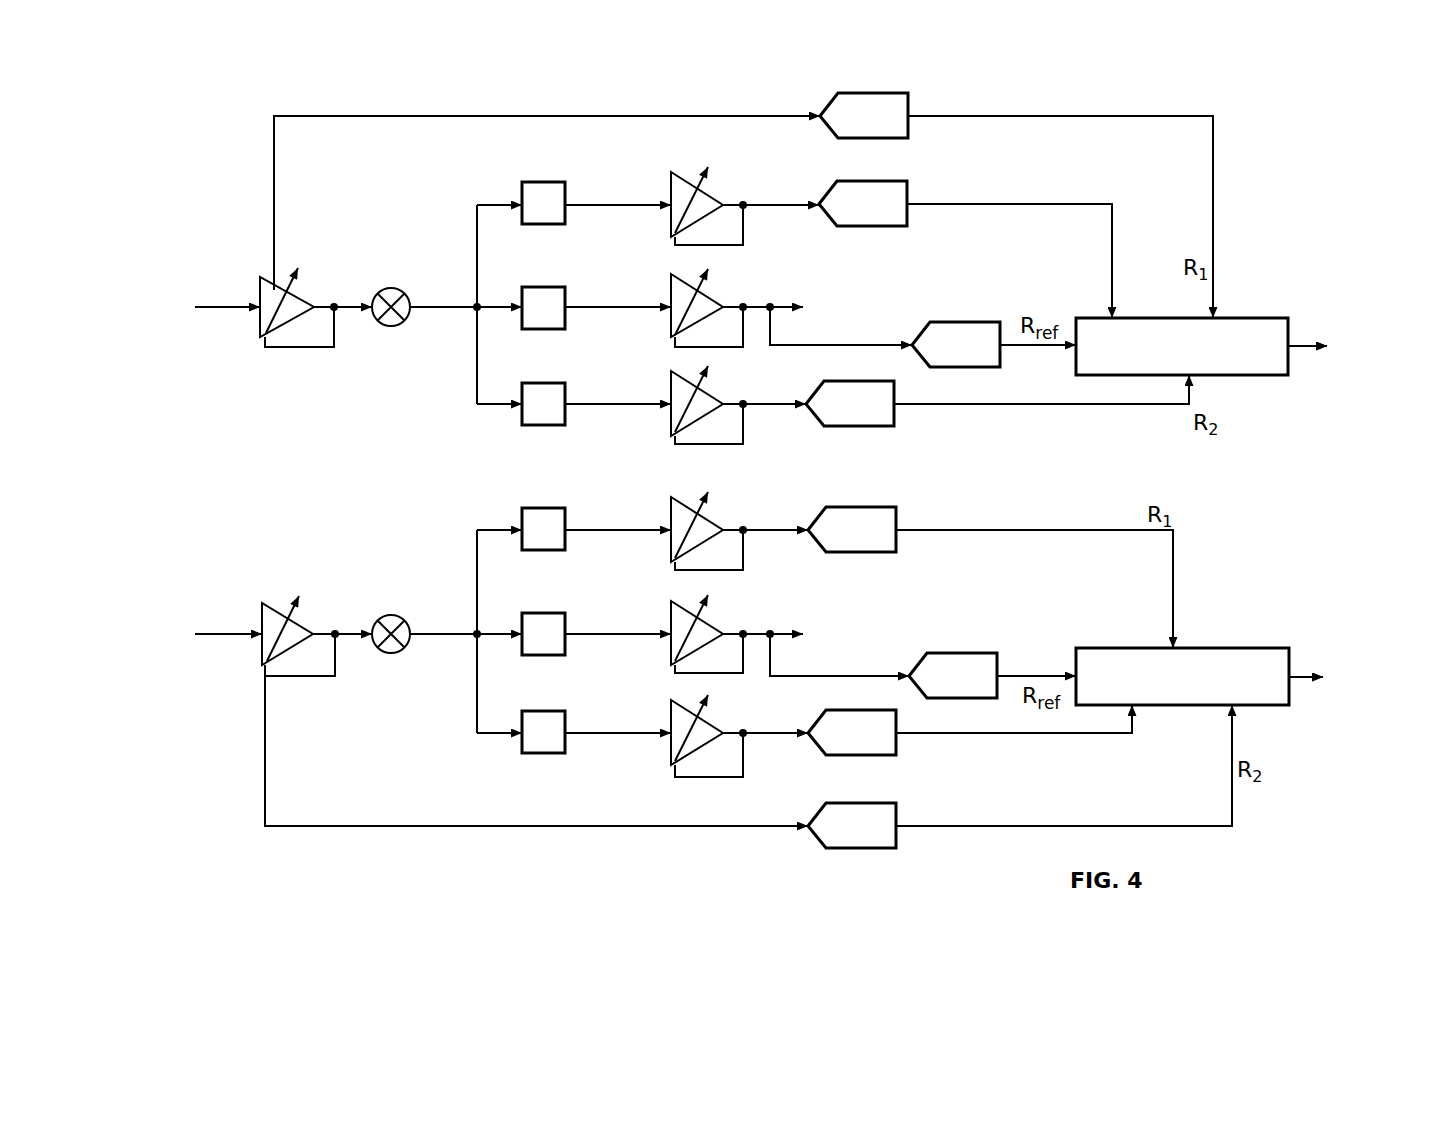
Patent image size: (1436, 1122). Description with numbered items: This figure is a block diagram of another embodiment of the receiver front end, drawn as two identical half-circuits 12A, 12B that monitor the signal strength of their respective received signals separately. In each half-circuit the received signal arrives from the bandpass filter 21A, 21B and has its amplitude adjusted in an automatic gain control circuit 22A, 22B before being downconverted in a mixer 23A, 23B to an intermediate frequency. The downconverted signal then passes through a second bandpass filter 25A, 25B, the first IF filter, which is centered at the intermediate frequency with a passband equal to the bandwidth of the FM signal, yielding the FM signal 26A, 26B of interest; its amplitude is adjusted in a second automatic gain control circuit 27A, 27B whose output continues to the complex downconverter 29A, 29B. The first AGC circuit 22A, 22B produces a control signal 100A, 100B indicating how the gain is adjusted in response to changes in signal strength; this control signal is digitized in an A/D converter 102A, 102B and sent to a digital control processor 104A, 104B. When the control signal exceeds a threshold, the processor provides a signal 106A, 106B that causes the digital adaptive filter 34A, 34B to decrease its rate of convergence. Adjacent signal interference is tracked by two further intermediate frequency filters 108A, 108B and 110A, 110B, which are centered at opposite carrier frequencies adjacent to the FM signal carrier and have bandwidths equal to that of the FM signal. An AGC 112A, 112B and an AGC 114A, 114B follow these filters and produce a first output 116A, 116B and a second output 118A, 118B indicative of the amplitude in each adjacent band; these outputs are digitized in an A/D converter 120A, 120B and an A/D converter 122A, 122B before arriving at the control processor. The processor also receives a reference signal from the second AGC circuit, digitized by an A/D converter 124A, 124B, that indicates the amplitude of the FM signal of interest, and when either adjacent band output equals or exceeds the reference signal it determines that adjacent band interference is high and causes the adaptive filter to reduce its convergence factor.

The half-circuit 12A is at (262, 128).
The half-circuit 12B is at (317, 846).
The bandpass filter 21A is at (191, 310).
The bandpass filter 21B is at (192, 639).
The automatic gain control circuit 22A is at (295, 290).
The automatic gain control circuit 22B is at (295, 616).
The mixer 23A is at (398, 285).
The mixer 23B is at (394, 614).
The second bandpass filter 25A is at (540, 289).
The second bandpass filter 25B is at (540, 614).
The FM signal 26A is at (638, 310).
The FM signal 26B is at (638, 637).
The second automatic gain control circuit 27A is at (703, 294).
The second automatic gain control circuit 27B is at (703, 622).
The complex downconverter 29A is at (817, 303).
The complex downconverter 29B is at (817, 630).
The digital adaptive filter 34A is at (1352, 358).
The digital adaptive filter 34B is at (1346, 686).
The control signal 100A is at (738, 108).
The control signal 100B is at (758, 828).
The A/D converter 102A is at (860, 93).
The A/D converter 102B is at (885, 850).
The digital control processor 104A is at (1279, 318).
The digital control processor 104B is at (1273, 648).
The signal 106A is at (1303, 350).
The signal 106B is at (1300, 683).
The intermediate frequency filter 108A is at (538, 184).
The intermediate frequency filter 108B is at (538, 508).
The intermediate frequency filter 110A is at (540, 383).
The intermediate frequency filter 110B is at (540, 712).
The AGC 112A is at (709, 192).
The AGC 112B is at (709, 519).
The AGC 114A is at (707, 392).
The AGC 114B is at (707, 724).
The output 116A is at (782, 209).
The output 116B is at (777, 534).
The output 118A is at (773, 409).
The output 118B is at (777, 738).
The A/D converter 120A is at (860, 181).
The A/D converter 120B is at (860, 507).
The A/D converter 122A is at (875, 428).
The A/D converter 122B is at (880, 757).
The A/D converter 124A is at (955, 326).
The A/D converter 124B is at (965, 653).